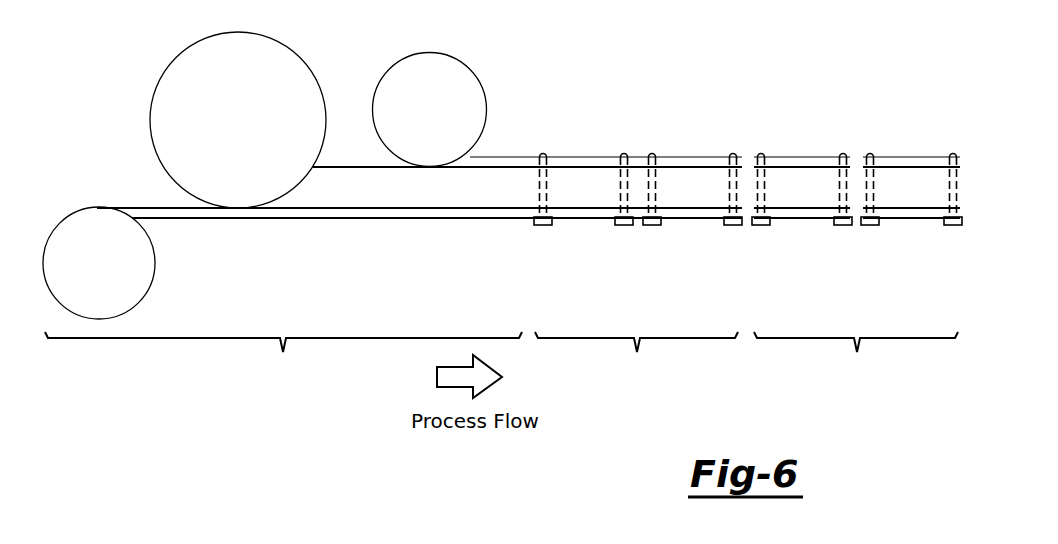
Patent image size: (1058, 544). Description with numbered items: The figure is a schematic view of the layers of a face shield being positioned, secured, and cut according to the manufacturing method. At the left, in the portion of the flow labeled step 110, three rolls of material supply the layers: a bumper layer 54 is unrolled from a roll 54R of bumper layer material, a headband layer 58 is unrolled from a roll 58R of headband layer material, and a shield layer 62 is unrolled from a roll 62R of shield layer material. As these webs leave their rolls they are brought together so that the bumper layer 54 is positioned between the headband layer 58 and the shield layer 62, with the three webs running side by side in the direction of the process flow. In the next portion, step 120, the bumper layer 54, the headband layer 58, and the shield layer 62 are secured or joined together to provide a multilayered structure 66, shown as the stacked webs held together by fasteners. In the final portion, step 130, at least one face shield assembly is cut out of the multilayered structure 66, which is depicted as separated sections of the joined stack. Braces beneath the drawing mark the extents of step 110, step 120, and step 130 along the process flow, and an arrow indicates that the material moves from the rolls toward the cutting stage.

The roll of bumper layer material 54R is at (228, 133).
The roll of headband layer material 58R is at (419, 123).
The roll of shield layer material 62R is at (89, 277).
The bumper layer 54 is at (352, 166).
The headband layer 58 is at (520, 157).
The shield layer 62 is at (240, 220).
The multilayered structure 66 is at (731, 90).
The step 110 is at (283, 360).
The step 120 is at (636, 360).
The step 130 is at (856, 360).